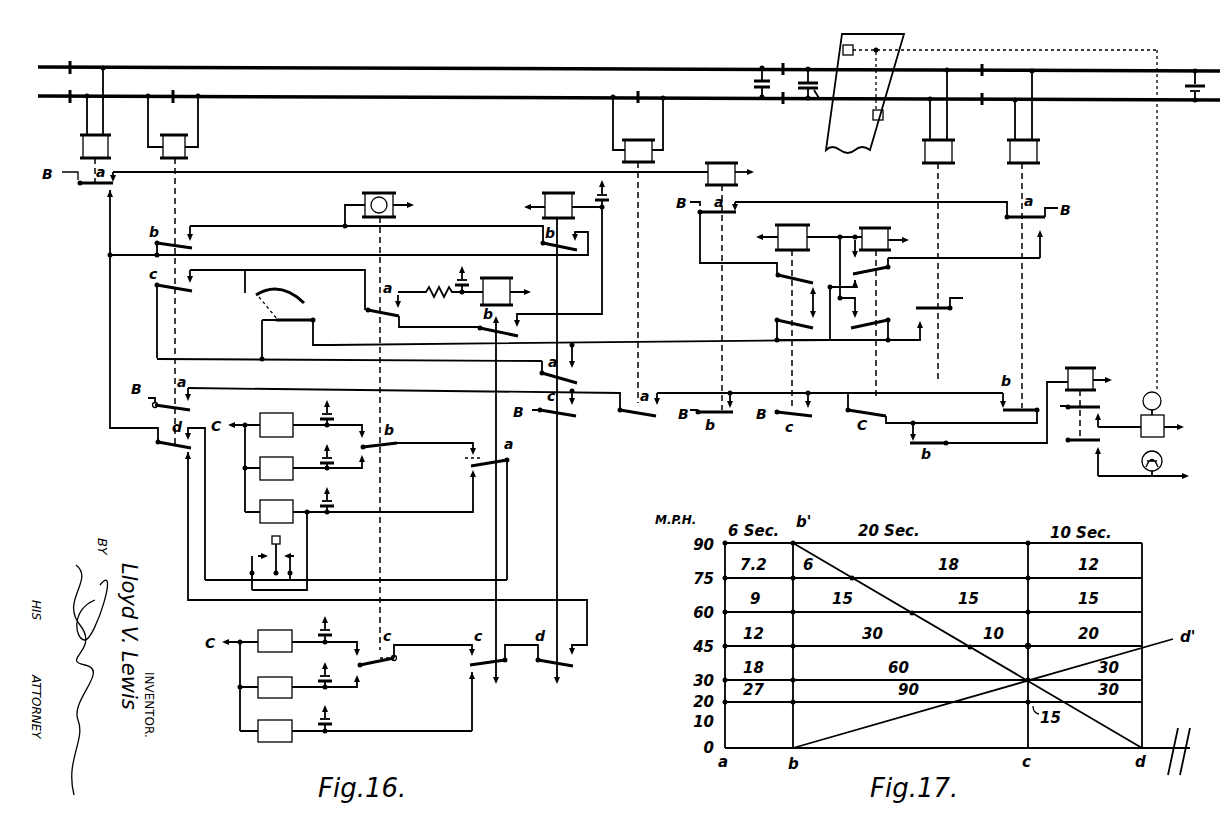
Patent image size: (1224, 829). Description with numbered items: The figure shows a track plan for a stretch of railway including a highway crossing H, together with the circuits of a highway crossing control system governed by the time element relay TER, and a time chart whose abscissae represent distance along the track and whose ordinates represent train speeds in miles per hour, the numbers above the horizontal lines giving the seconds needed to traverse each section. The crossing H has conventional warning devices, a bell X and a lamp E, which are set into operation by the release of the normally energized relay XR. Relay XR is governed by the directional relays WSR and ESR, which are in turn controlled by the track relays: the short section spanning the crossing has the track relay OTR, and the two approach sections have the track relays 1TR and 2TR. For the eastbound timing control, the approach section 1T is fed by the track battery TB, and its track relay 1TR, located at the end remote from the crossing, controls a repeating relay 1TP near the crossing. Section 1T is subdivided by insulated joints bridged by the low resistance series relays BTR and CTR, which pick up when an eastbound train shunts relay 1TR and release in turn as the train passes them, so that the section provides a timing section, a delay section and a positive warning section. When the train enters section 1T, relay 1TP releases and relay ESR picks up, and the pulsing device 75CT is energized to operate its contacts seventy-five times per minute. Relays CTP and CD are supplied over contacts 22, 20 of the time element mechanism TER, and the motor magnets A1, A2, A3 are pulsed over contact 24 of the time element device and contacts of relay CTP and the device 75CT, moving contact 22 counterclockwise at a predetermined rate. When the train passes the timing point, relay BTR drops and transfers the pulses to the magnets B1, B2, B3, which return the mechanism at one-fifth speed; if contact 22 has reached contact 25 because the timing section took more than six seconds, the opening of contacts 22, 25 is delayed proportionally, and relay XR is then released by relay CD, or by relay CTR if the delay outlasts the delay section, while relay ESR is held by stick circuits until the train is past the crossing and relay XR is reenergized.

The approach track section 1T is at (629, 74).
The track battery TB is at (756, 85).
The highway crossing H is at (991, 93).
The track relay 1TR is at (83, 140).
The low resistance series relay BTR is at (173, 270).
The low resistance series relay CTR is at (638, 249).
The repeating relay 1TP is at (736, 277).
The pulsing device 75CT is at (386, 412).
The relay CD is at (560, 429).
The repeater relay CTP is at (472, 281).
The time element relay TER is at (265, 281).
The fixed contact 25 is at (308, 298).
The moving contact 22 is at (325, 312).
The normal contact 20 is at (296, 337).
The westbound directional relay WSR is at (813, 308).
The eastbound directional relay ESR is at (902, 304).
The track relay OTR is at (952, 145).
The track relay 2TR is at (1037, 145).
The crossing relay XR is at (1095, 412).
The bell X is at (1169, 243).
The lamp E is at (1149, 466).
The motor magnet A1 is at (360, 496).
The motor magnet A2 is at (305, 416).
The motor magnet A3 is at (305, 459).
The contact of time element device 24 is at (272, 540).
The motor magnet B1 is at (356, 722).
The motor magnet B2 is at (300, 634).
The motor magnet B3 is at (300, 678).